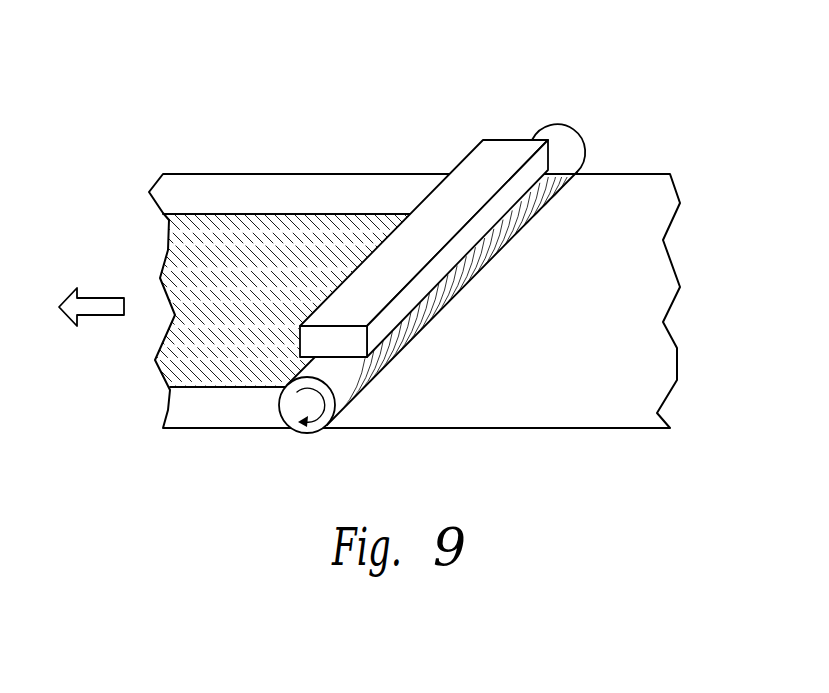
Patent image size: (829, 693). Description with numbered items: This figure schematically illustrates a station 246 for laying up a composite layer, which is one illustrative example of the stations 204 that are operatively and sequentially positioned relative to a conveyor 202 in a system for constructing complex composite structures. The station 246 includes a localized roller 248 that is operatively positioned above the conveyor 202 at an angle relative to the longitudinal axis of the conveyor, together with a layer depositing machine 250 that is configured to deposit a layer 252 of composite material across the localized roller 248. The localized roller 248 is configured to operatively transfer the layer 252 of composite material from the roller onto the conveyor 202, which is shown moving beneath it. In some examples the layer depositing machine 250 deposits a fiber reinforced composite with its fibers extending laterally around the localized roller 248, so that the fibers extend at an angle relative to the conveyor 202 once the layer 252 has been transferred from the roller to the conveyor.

The conveyor 202 is at (223, 173).
The station 204 is at (386, 236).
The station 246 is at (497, 224).
The localized roller 248 is at (585, 145).
The layer depositing machine 250 is at (463, 155).
The layer 252 is at (293, 214).